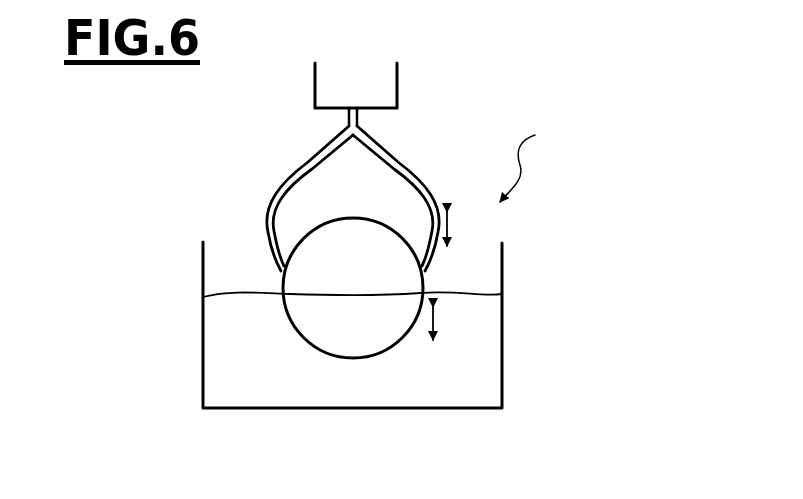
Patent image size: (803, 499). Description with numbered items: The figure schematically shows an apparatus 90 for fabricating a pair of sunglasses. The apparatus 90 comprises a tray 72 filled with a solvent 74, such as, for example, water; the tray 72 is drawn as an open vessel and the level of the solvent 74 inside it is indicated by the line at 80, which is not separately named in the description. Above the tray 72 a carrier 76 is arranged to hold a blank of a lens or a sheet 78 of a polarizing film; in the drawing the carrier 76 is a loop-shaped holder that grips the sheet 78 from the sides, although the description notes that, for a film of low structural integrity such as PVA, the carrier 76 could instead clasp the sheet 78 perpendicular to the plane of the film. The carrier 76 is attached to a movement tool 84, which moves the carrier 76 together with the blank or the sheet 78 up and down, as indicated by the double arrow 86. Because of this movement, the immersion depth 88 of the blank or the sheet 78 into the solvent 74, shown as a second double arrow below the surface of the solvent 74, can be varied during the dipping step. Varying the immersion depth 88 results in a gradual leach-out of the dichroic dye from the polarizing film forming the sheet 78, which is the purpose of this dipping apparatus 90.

The tray 72 is at (502, 380).
The solvent 74 is at (483, 310).
The carrier 76 is at (407, 168).
The sheet of a polarizing film 78 is at (290, 320).
The liquid surface 80 is at (238, 291).
The movement tool 84 is at (397, 72).
The double arrow 86 is at (447, 228).
The immersion depth 88 is at (433, 325).
The apparatus 90 is at (539, 161).